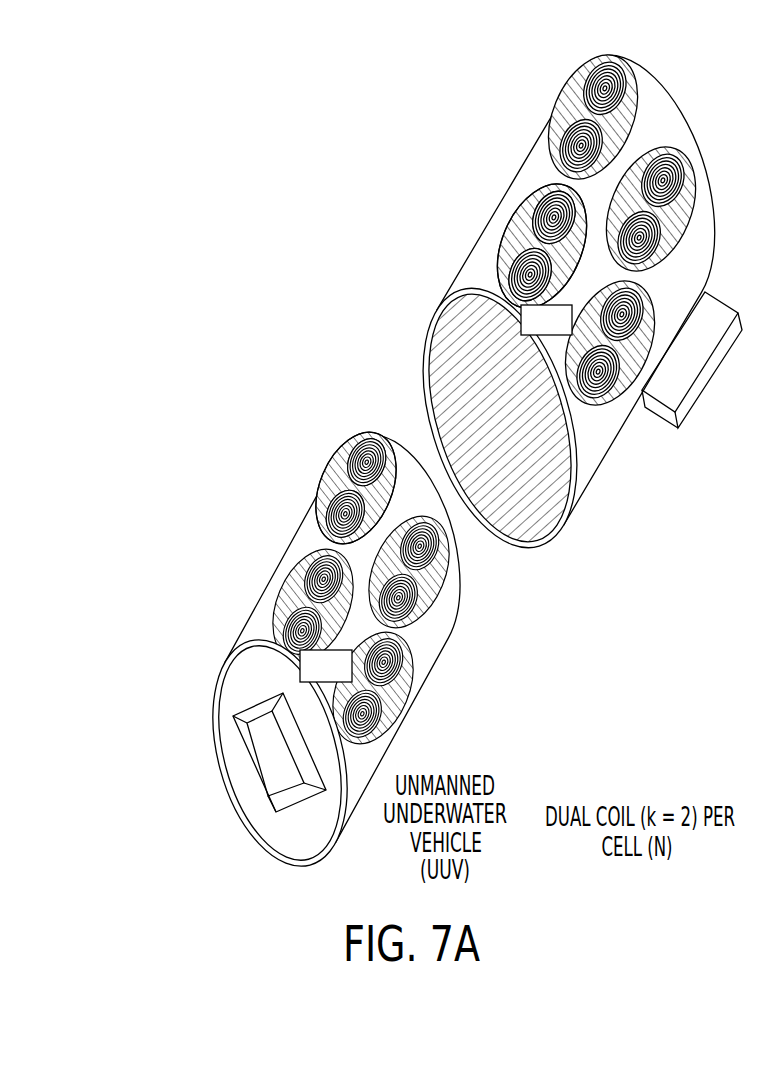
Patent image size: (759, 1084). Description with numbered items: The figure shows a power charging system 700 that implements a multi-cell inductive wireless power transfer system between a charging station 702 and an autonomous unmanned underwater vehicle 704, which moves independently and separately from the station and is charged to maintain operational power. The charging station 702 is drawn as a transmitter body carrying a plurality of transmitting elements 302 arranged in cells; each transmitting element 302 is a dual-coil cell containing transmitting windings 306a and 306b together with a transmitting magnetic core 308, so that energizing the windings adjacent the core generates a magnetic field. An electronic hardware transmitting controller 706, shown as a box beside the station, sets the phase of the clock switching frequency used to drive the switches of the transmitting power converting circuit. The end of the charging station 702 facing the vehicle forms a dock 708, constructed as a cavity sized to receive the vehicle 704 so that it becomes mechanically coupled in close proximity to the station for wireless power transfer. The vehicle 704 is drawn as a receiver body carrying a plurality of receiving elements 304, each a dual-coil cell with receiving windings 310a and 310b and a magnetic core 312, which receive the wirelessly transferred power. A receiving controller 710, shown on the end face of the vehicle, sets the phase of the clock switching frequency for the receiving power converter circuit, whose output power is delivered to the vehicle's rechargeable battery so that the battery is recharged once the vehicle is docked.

The power charging system 700 is at (313, 267).
The charging station 702 is at (547, 304).
The vehicle 704 is at (297, 635).
The transmitting controller 706 is at (694, 394).
The dock 708 is at (472, 409).
The receiving controller 710 is at (277, 772).
The transmitting element 302 is at (492, 247).
The receiving element 304 is at (320, 477).
The transmitting winding 306a is at (533, 197).
The transmitting winding 306b is at (505, 282).
The transmitting magnetic core 308 is at (508, 268).
The receiving winding 310a is at (356, 455).
The receiving winding 310b is at (355, 499).
The magnetic core 312 is at (328, 505).